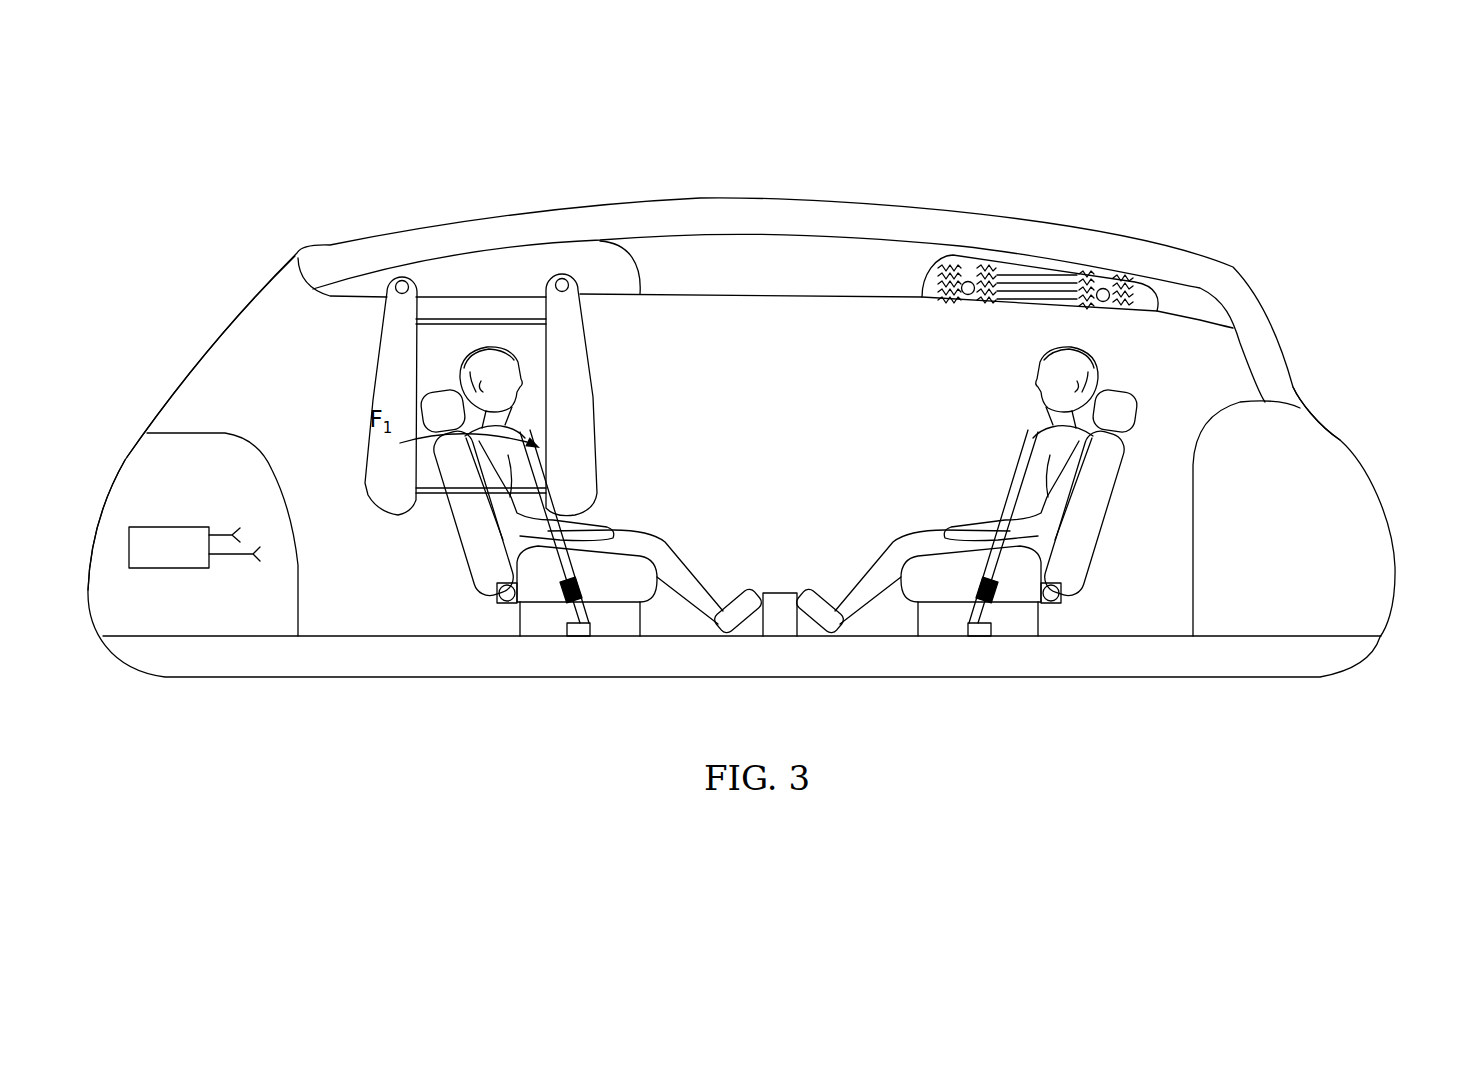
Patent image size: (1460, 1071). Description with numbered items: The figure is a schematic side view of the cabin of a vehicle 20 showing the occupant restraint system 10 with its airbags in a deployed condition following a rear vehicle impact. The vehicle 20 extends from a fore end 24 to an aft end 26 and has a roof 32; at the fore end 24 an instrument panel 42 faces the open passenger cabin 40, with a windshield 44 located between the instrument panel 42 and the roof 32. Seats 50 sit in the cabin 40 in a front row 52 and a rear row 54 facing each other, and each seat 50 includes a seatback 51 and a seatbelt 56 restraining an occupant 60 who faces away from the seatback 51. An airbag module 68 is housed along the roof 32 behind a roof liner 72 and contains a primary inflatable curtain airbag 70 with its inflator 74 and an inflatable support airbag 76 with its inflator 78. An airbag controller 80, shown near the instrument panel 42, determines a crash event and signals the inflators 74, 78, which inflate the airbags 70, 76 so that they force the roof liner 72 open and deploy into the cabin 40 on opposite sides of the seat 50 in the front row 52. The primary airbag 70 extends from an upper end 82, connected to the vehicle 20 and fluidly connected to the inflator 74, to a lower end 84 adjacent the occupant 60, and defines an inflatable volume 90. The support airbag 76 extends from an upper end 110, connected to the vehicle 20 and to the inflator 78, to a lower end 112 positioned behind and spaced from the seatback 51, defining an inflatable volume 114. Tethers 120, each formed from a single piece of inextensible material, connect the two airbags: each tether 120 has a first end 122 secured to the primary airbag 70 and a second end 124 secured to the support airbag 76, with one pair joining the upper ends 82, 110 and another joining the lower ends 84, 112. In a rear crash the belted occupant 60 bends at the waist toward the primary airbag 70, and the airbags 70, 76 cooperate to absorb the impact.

The occupant restraint system 10 is at (508, 231).
The vehicle 20 is at (1372, 549).
The first or fore end 24 is at (152, 370).
The second or aft end 26 is at (1345, 370).
The roof 32 is at (840, 213).
The passenger compartment or cabin 40 is at (804, 444).
The instrument panel 42 is at (240, 433).
The windshield or windscreen 44 is at (222, 343).
The seat 50 is at (483, 573).
The seatback 51 is at (473, 557).
The front row 52 is at (578, 653).
The rear row 54 is at (978, 653).
The seatbelt 56 is at (563, 570).
The occupant 60 is at (523, 500).
The airbag module 68 is at (608, 241).
The primary inflatable curtain airbag 70 is at (597, 406).
The roof liner 72 is at (722, 296).
The inflator 74 is at (562, 278).
The inflatable support airbag 76 is at (371, 425).
The inflator 78 is at (402, 280).
The airbag controller 80 is at (170, 527).
The upper end 82 is at (598, 282).
The lower end 84 is at (614, 480).
The inflatable volume 90 is at (567, 362).
The upper end 110 is at (372, 305).
The lower end 112 is at (359, 503).
The inflatable volume 114 is at (379, 463).
The tether 120 is at (490, 318).
The first end 122 is at (533, 296).
The second end 124 is at (447, 296).